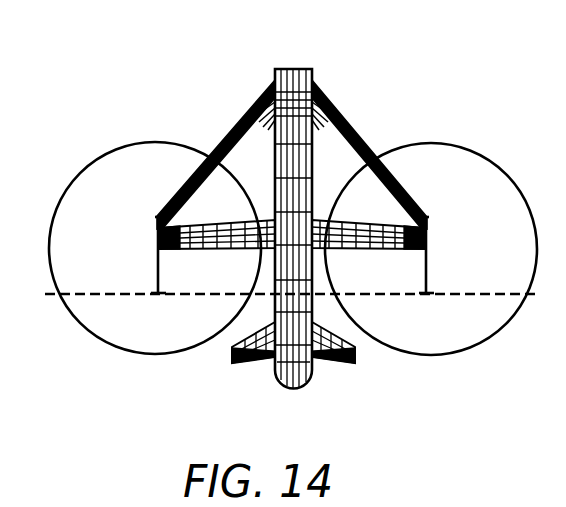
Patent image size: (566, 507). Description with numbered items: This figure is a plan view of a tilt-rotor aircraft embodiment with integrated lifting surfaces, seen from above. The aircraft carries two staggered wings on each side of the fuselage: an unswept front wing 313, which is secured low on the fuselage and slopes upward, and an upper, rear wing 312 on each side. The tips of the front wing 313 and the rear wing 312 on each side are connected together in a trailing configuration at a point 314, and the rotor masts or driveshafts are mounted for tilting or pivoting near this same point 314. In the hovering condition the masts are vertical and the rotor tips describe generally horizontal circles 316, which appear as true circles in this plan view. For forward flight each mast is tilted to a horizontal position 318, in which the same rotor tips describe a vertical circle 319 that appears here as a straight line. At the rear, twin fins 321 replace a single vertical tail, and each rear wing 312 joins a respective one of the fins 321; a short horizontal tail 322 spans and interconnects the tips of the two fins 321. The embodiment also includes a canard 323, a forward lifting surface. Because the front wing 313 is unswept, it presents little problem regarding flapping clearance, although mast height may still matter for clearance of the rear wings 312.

The upper, rear wing 312 is at (230, 128).
The unswept front wing 313 is at (232, 249).
The point 314 is at (156, 222).
The horizontal circle 316 is at (117, 146).
The horizontal position 318 is at (157, 268).
The vertical circle 319 is at (182, 296).
The fin 321 is at (268, 127).
The short horizontal tail 322 is at (300, 69).
The canard 323 is at (349, 367).